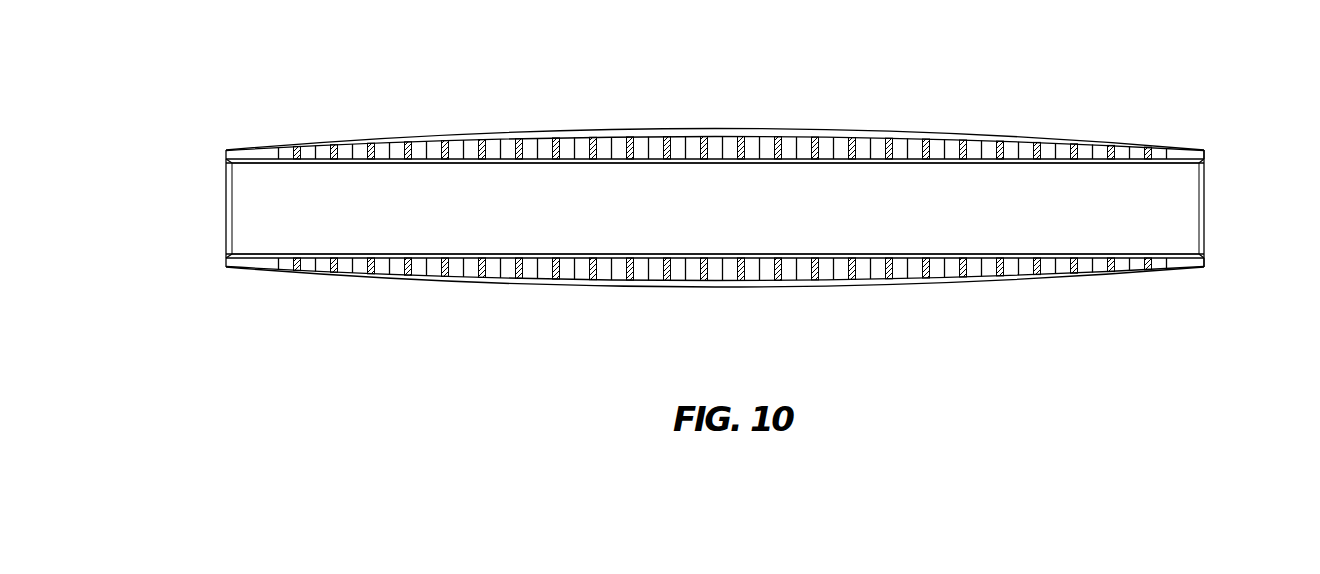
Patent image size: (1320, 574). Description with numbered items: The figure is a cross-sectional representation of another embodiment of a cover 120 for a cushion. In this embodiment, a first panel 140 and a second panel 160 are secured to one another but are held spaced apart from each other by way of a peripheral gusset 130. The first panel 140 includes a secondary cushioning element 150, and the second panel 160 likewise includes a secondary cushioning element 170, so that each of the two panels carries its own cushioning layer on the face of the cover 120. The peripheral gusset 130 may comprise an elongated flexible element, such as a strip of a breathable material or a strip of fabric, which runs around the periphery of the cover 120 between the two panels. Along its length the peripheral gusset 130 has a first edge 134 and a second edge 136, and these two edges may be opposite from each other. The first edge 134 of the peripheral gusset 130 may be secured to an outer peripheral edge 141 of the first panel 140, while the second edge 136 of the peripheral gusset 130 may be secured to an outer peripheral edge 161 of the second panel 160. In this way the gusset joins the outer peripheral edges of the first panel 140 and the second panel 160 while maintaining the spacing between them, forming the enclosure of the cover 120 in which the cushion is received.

The cover 120 is at (701, 209).
The peripheral gusset 130 is at (1206, 217).
The first edge 134 is at (1205, 165).
The second edge 136 is at (1202, 258).
The first panel 140 is at (1105, 142).
The outer peripheral edge 141 is at (1198, 150).
The secondary cushioning element 150 is at (785, 131).
The second panel 160 is at (331, 280).
The outer peripheral edge 161 is at (1195, 268).
The secondary cushioning element 170 is at (537, 285).